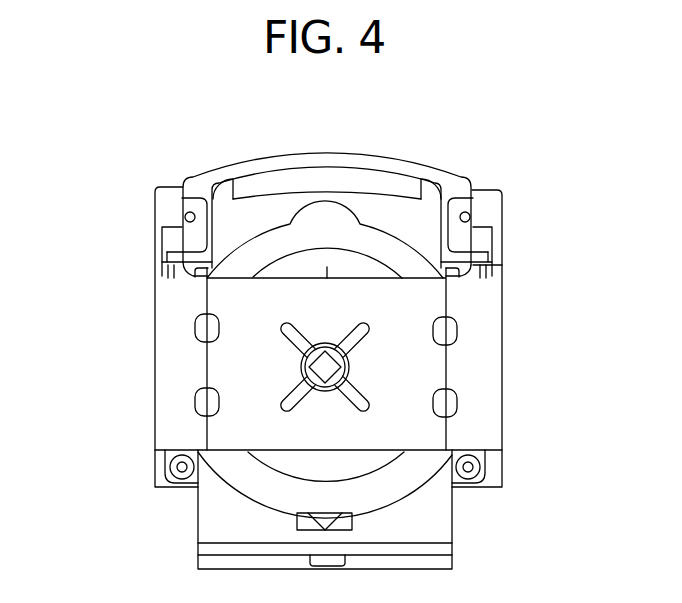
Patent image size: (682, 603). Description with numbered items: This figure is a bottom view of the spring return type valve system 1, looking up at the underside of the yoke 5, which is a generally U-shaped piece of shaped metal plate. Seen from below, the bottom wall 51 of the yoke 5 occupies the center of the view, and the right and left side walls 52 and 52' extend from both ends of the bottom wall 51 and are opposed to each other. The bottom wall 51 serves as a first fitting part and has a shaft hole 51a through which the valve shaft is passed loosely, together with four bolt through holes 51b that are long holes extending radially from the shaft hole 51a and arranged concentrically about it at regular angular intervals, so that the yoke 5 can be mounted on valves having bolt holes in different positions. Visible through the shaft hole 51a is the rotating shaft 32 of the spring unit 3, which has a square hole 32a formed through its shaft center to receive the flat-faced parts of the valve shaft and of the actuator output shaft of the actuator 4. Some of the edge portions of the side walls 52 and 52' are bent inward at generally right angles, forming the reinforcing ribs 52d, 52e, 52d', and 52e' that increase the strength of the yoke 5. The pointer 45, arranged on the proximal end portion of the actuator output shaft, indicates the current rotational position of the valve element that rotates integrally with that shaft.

The spring return type valve system 1 is at (138, 172).
The spring unit 3 is at (386, 206).
The actuator 4 is at (240, 158).
The yoke 5 is at (152, 237).
The rotating shaft 32 is at (302, 360).
The square hole 32a is at (311, 367).
The pointer 45 is at (352, 520).
The bottom wall 51 is at (222, 427).
The shaft hole 51a is at (350, 368).
The bolt through holes 51b is at (365, 325).
The side wall 52 is at (380, 338).
The side wall 52' is at (128, 337).
The reinforcing rib 52d is at (520, 230).
The reinforcing rib 52d' is at (132, 219).
The reinforcing rib 52e is at (537, 271).
The reinforcing rib 52e' is at (113, 266).